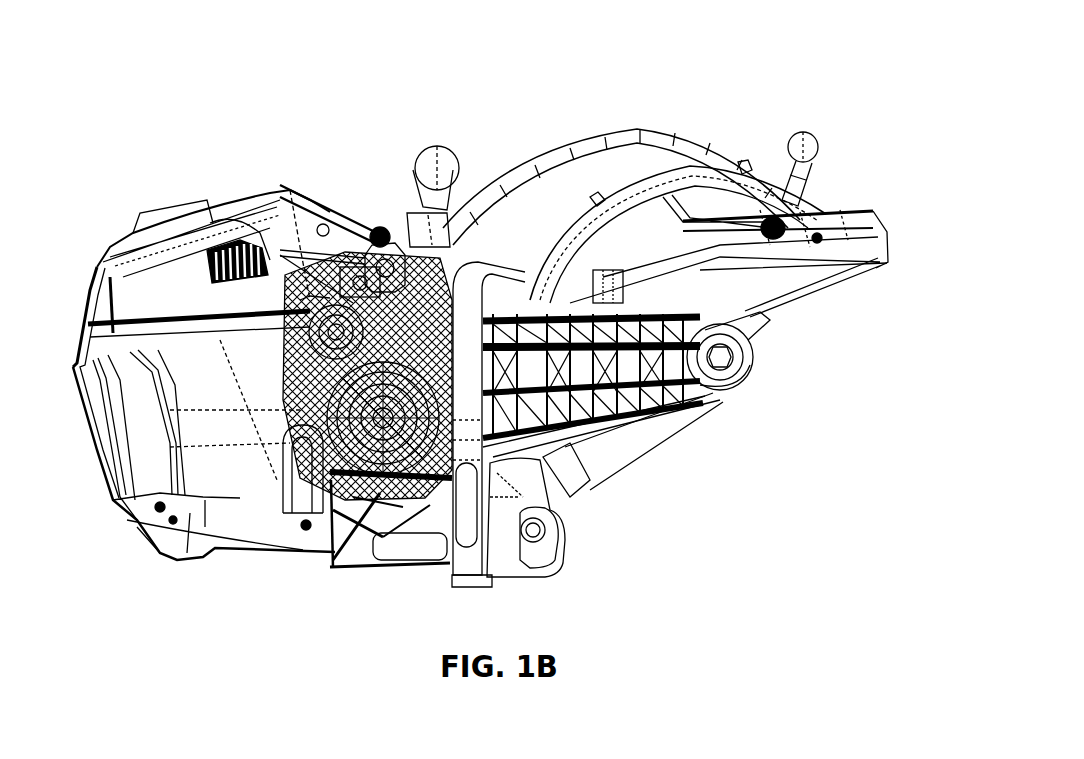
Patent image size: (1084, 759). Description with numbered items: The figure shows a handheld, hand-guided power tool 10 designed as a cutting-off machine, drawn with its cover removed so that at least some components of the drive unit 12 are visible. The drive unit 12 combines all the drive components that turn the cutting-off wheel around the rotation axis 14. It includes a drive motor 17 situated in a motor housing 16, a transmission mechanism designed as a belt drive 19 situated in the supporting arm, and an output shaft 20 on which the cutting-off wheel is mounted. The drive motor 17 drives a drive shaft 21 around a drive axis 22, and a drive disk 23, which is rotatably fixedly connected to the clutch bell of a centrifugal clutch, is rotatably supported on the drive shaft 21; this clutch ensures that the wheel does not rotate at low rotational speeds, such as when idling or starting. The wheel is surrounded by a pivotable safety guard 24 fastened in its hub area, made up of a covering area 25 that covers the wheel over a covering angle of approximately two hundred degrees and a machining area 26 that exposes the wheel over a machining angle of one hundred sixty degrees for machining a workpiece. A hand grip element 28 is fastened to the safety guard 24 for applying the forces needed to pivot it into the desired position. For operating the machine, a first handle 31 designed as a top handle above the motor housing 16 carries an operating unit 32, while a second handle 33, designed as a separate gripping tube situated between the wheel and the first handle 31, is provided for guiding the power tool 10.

The power tool 10 is at (196, 136).
The drive unit 12 is at (312, 300).
The rotation axis 14 is at (748, 355).
The motor housing 16 is at (207, 463).
The drive motor 17 is at (200, 420).
The belt drive 19 is at (530, 300).
The output shaft 20 is at (723, 396).
The drive shaft 21 is at (380, 262).
The drive axis 22 is at (338, 556).
The drive disk 23 is at (410, 540).
The safety guard 24 is at (712, 216).
The covering area 25 is at (810, 208).
The machining area 26 is at (681, 456).
The hand grip element 28 is at (806, 142).
The first handle 31 is at (130, 226).
The operating unit 32 is at (200, 299).
The second handle 33 is at (432, 164).